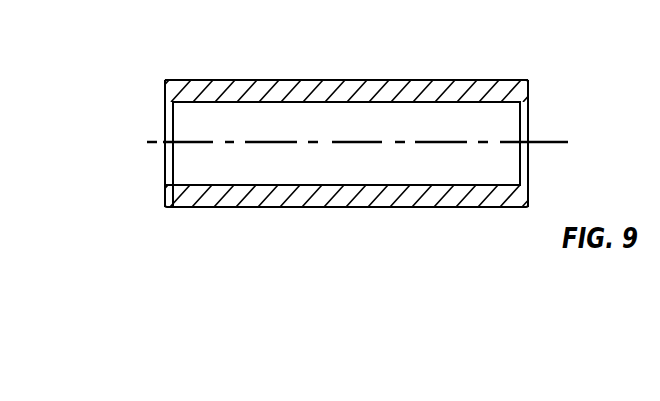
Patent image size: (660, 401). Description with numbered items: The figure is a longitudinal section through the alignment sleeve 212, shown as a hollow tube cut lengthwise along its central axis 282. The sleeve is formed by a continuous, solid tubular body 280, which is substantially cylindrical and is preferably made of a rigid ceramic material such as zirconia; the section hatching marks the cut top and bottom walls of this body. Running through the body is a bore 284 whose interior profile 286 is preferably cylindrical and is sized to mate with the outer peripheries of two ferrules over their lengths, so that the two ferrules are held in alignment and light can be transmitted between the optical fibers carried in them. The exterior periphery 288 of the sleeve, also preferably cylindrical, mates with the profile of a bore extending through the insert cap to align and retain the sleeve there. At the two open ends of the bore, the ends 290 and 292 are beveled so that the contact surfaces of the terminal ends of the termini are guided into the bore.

The alignment sleeve 212 is at (358, 78).
The tubular body 280 is at (210, 193).
The central axis 282 is at (156, 139).
The bore 284 is at (463, 185).
The interior profile 286 is at (310, 103).
The exterior periphery 288 is at (203, 80).
The end of the bore 290 is at (167, 185).
The end of the bore 292 is at (530, 105).